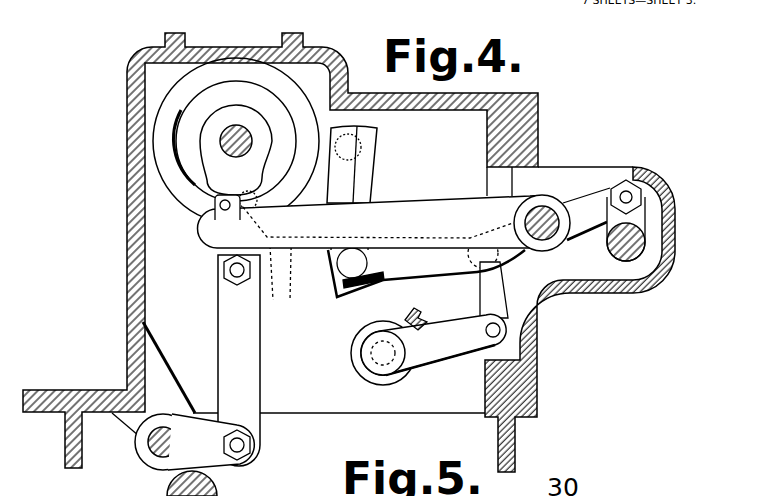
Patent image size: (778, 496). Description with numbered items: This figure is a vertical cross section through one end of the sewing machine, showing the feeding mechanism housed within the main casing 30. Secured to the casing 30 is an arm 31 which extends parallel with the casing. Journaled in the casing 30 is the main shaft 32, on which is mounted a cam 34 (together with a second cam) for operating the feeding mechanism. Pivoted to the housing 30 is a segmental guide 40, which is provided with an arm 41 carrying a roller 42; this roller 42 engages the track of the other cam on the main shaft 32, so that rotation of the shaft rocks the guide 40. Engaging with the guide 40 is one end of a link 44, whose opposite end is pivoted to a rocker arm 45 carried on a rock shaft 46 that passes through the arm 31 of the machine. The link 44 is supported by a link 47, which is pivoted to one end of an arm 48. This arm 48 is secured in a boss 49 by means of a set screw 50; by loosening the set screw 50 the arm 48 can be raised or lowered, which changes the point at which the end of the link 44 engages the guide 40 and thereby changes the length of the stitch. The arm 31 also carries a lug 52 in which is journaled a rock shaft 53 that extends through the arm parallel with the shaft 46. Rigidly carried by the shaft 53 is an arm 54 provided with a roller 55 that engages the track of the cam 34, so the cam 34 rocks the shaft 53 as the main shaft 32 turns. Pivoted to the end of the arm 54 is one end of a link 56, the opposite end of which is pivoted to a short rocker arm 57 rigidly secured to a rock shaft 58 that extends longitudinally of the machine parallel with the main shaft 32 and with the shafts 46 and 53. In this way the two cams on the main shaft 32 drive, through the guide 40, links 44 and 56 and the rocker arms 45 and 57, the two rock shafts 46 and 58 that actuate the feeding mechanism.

The main casing 30 is at (137, 197).
The arm 31 is at (627, 288).
The main shaft 32 is at (230, 138).
The cam 34 is at (178, 98).
The segmental guide 40 is at (355, 177).
The arm 41 is at (299, 252).
The roller 42 is at (283, 265).
The link 44 is at (443, 260).
The rocker arm 45 is at (640, 213).
The rock shaft 46 is at (633, 240).
The link 47 is at (490, 297).
The arm 48 is at (448, 347).
The boss 49 is at (363, 363).
The set screw 50 is at (407, 318).
The lug 52 is at (548, 268).
The rock shaft 53 is at (542, 208).
The arm 54 is at (380, 222).
The roller 55 is at (217, 210).
The link 56 is at (235, 341).
The short rocker arm 57 is at (208, 455).
The rock shaft 58 is at (153, 447).